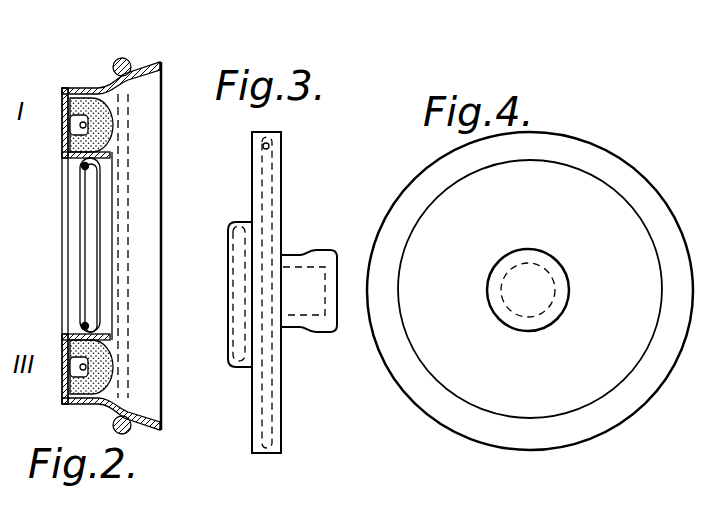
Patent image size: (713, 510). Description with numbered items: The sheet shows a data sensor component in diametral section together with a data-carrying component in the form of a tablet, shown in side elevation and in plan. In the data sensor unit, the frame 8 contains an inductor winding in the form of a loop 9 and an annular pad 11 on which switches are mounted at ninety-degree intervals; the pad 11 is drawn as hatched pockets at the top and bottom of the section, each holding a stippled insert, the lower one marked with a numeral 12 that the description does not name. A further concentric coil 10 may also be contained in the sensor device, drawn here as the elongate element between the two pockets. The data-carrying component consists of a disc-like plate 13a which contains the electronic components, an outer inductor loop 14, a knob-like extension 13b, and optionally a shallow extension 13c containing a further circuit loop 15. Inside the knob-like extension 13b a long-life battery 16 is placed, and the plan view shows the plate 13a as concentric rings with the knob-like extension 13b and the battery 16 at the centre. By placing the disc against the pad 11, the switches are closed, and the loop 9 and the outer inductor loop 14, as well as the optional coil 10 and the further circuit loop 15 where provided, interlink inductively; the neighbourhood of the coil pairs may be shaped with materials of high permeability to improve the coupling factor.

In FIG. 2, the frame 8 is at (101, 89).
In FIG. 2, the loop 9 is at (126, 64).
In FIG. 2, the concentric coil 10 is at (80, 273).
In FIG. 2, the annular pad 11 is at (66, 89).
In FIG. 2, the resilient insert 12 is at (63, 128).
In FIG. 3, the disc-like plate 13a is at (281, 185).
In FIG. 4, the disc-like plate 13a is at (570, 148).
In FIG. 3, the knob-like extension 13b is at (305, 256).
In FIG. 4, the knob-like extension 13b is at (543, 257).
In FIG. 3, the shallow extension 13c is at (230, 336).
In FIG. 3, the outer inductor loop 14 is at (262, 147).
In FIG. 3, the further circuit loop 15 is at (239, 229).
In FIG. 3, the long-life battery 16 is at (313, 315).
In FIG. 4, the long-life battery 16 is at (503, 290).